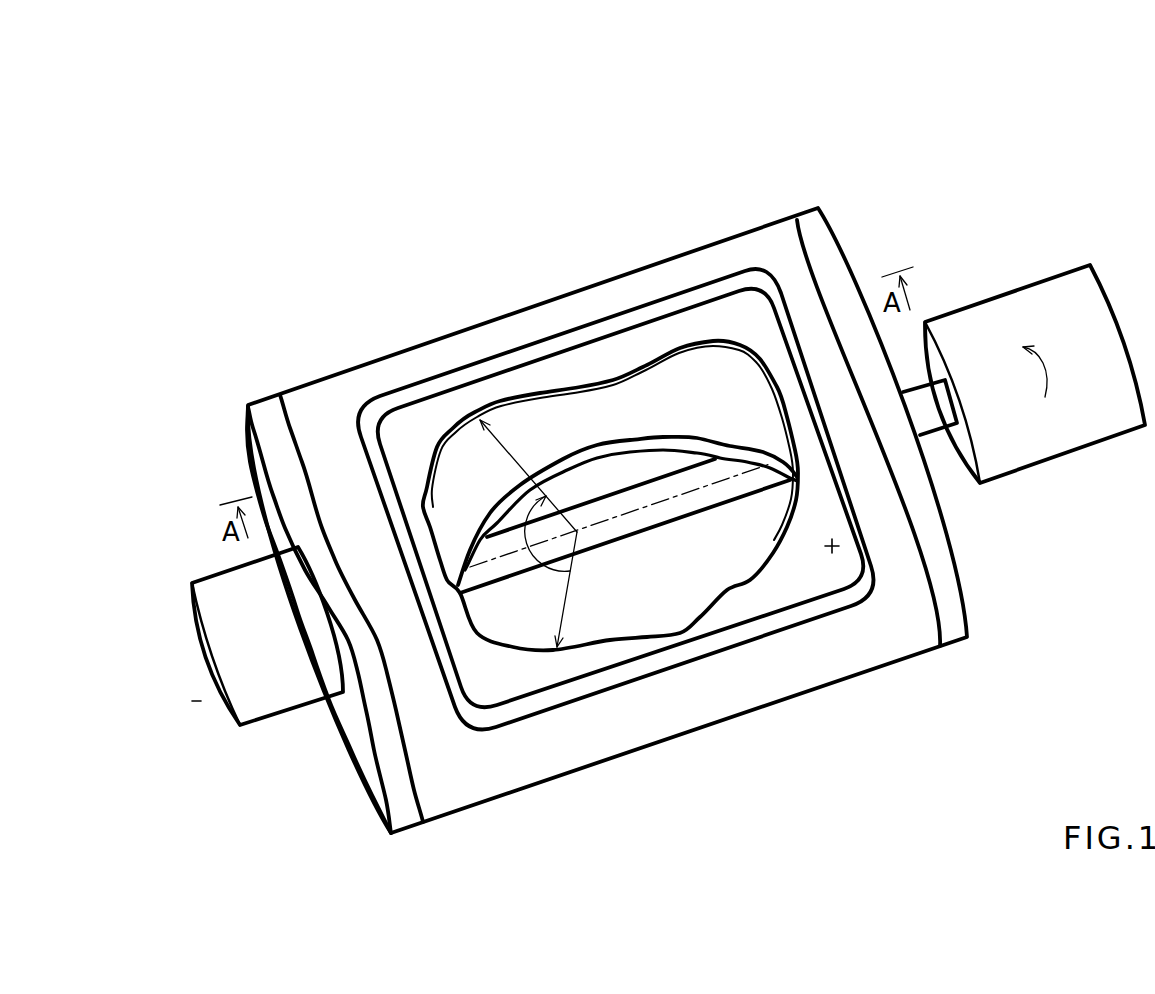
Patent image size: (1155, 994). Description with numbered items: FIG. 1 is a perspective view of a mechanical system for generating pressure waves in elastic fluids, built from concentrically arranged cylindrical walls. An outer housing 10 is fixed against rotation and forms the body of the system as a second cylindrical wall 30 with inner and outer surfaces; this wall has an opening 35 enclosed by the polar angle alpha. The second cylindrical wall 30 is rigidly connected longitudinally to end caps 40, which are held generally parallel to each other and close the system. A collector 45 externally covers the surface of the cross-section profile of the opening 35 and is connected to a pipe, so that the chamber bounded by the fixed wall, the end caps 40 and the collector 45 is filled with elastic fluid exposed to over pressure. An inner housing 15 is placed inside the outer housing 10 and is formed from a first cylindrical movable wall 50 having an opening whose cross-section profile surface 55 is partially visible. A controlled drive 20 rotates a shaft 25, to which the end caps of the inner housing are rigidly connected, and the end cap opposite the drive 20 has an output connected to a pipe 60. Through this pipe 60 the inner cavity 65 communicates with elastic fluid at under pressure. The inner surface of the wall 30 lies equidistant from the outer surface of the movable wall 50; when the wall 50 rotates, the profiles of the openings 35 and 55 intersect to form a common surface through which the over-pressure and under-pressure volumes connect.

The outer housing 10 is at (813, 200).
The inner housing 15 is at (781, 593).
The controlled drive 20 is at (1068, 455).
The shaft 25 is at (942, 429).
The second cylindrical wall 30 is at (773, 223).
The opening 35 is at (437, 447).
The end caps 40 is at (283, 423).
The collector 45 is at (708, 292).
The first cylindrical movable wall 50 is at (668, 402).
The surface of profile of a cross-section 55 is at (582, 462).
The pipe 60 is at (303, 706).
The inner cavity 65 is at (630, 590).